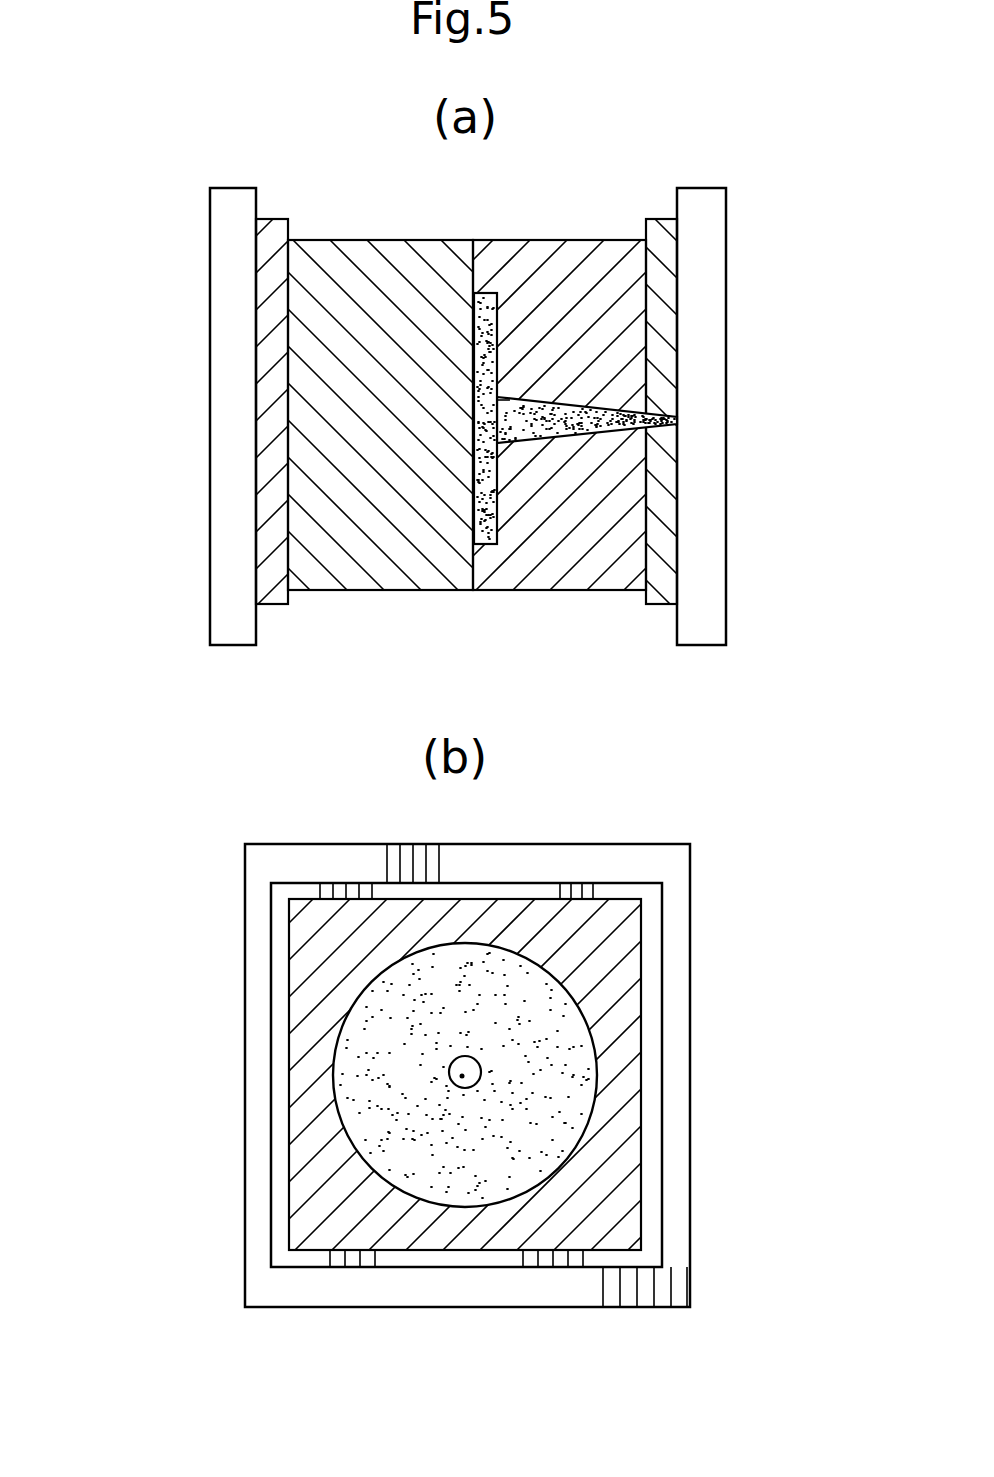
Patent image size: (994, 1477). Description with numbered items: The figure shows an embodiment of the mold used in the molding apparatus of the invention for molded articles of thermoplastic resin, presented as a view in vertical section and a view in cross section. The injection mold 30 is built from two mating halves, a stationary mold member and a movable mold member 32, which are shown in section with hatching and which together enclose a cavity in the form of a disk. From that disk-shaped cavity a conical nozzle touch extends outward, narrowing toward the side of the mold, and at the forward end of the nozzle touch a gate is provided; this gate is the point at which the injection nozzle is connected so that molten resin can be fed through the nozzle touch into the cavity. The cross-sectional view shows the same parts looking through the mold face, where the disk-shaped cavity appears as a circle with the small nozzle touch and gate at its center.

The injection mold 30 is at (305, 199).
The movable mold member 32 is at (347, 569).